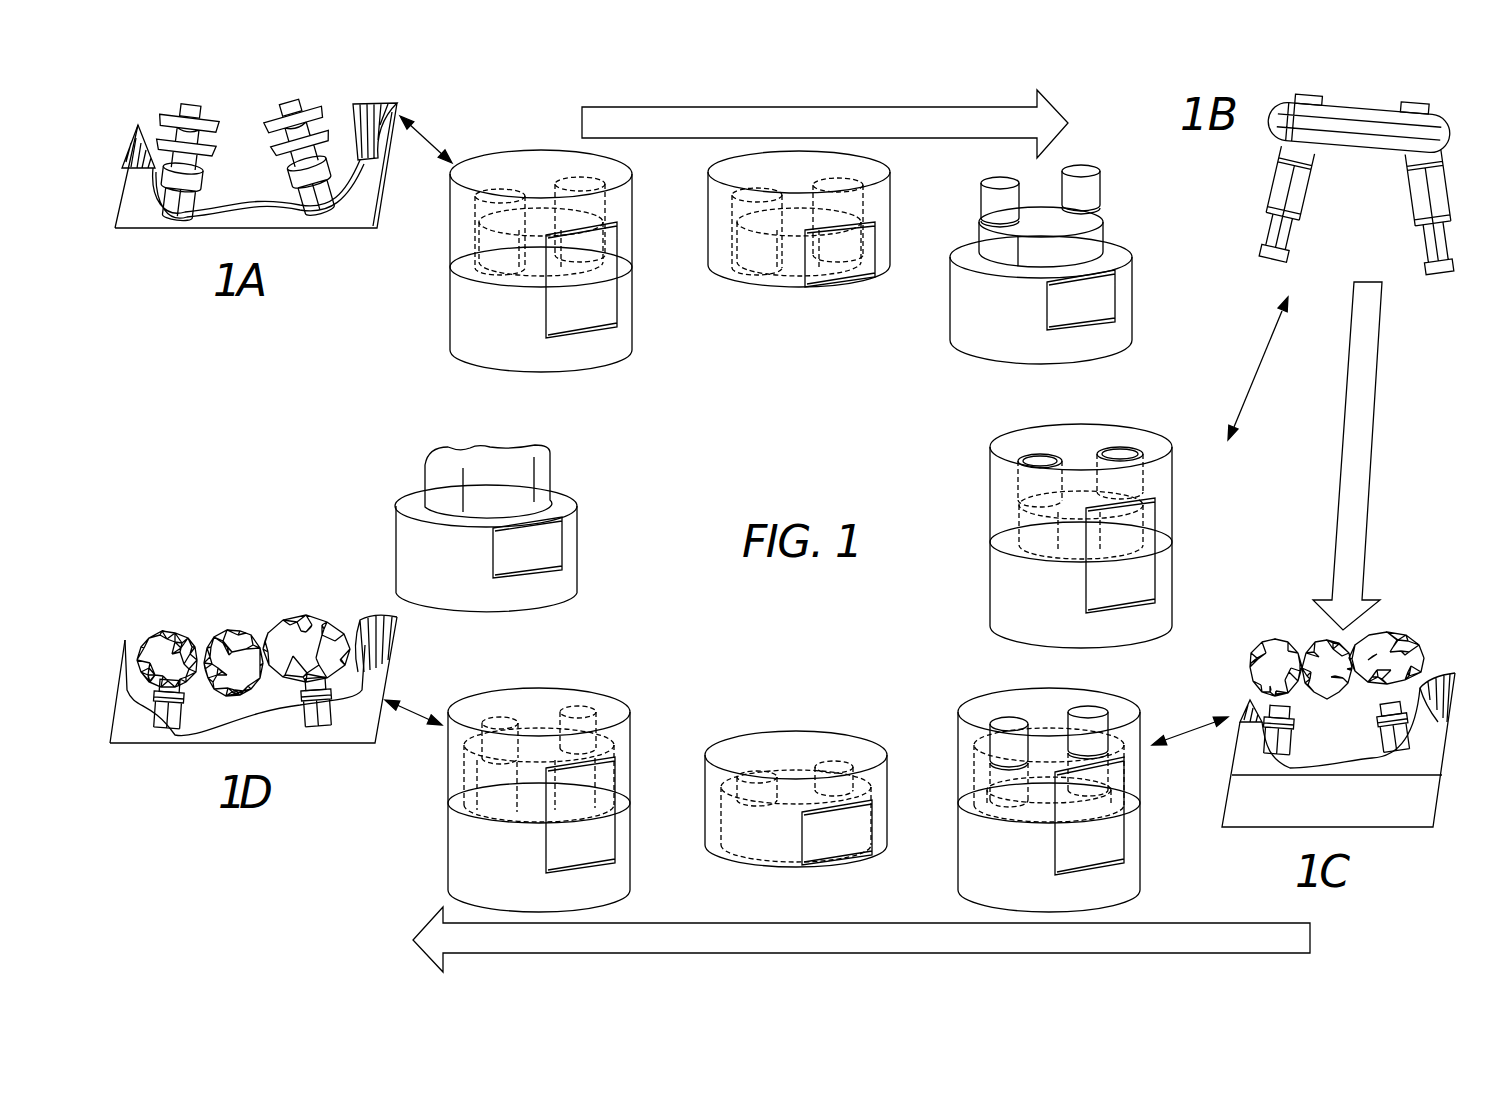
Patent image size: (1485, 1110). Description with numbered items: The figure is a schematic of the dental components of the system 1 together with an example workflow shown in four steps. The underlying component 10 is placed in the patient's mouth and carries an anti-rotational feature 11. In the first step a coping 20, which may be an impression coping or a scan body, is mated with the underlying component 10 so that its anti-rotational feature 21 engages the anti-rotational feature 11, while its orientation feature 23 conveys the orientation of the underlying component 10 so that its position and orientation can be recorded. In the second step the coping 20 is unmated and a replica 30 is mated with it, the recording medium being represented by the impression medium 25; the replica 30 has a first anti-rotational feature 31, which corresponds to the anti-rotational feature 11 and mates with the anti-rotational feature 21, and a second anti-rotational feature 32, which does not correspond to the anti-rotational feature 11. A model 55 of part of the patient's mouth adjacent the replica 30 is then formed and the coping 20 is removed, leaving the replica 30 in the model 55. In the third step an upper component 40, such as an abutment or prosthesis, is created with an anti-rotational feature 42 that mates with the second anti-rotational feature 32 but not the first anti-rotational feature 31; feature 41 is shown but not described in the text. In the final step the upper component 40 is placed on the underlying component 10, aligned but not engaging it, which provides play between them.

The system 1 is at (502, 128).
The underlying component 10 is at (634, 303).
The anti-rotational feature 11 is at (470, 265).
The coping 20 is at (633, 212).
The anti-rotational feature 21 is at (495, 233).
The orientation feature 23 is at (888, 165).
The impression medium 25 is at (1366, 108).
The replica 30 is at (1133, 316).
The first anti-rotational feature 31 is at (993, 245).
The second anti-rotational feature 32 is at (1000, 180).
The upper component 40 is at (633, 745).
The receiving cavity 41 is at (465, 770).
The anti-rotational feature 42 is at (500, 720).
The model 55 is at (1338, 750).